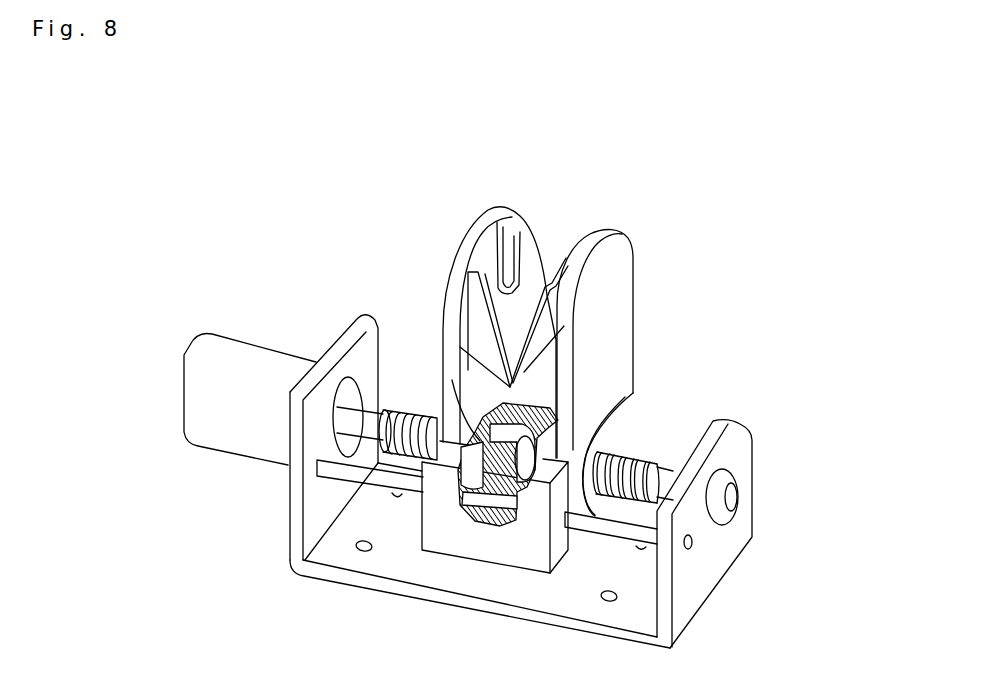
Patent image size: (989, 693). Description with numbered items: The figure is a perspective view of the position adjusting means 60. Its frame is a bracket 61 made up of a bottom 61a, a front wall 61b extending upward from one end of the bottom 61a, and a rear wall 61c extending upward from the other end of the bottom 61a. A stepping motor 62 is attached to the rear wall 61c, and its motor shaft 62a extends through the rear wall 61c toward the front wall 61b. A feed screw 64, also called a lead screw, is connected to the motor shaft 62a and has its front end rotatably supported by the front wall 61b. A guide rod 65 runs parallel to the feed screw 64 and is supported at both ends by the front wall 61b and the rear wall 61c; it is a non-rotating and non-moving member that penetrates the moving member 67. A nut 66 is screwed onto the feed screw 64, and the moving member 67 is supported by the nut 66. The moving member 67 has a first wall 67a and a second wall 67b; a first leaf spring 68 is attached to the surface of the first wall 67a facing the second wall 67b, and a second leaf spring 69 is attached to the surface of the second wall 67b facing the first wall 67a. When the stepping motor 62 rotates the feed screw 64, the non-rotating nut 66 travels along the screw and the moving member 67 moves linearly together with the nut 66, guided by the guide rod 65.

The position adjusting means 60 is at (655, 227).
The bracket 61 is at (710, 609).
The bottom 61a is at (465, 577).
The front wall 61b is at (717, 553).
The rear wall 61c is at (325, 503).
The stepping motor 62 is at (208, 385).
The motor shaft 62a is at (370, 418).
The feed screw 64 is at (648, 460).
The guide rod 65 is at (370, 480).
The nut 66 is at (503, 530).
The moving member 67 is at (543, 552).
The first wall 67a is at (618, 305).
The second wall 67b is at (460, 257).
The first leaf spring 68 is at (560, 276).
The second leaf spring 69 is at (519, 221).